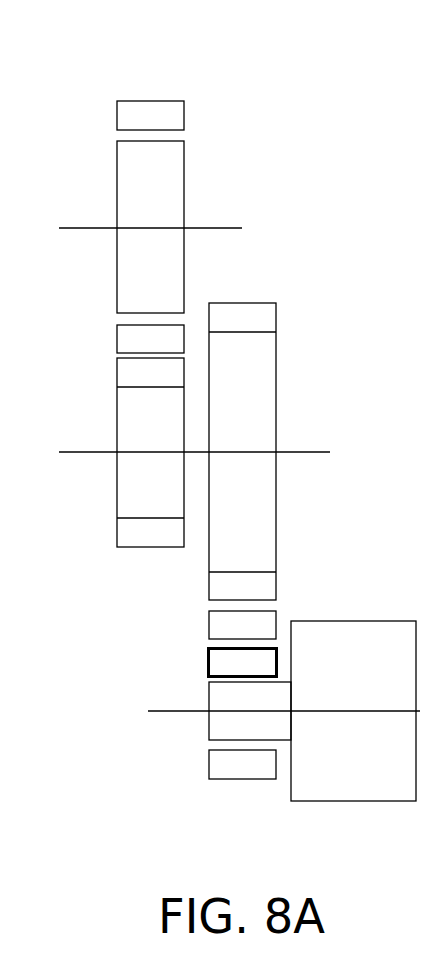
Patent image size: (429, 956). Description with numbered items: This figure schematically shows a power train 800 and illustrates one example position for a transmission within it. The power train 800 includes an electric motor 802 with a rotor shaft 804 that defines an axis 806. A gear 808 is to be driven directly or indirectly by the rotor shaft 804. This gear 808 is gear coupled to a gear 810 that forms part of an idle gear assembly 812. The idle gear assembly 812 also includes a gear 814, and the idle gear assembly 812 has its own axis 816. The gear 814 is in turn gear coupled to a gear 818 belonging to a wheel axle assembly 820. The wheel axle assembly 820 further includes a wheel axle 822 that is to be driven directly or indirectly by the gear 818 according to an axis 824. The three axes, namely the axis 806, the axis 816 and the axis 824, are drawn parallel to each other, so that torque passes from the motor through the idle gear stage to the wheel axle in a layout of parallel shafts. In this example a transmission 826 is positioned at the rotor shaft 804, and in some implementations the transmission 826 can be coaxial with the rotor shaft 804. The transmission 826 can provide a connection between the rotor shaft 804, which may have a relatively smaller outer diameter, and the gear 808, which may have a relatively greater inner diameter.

The power train 800 is at (233, 41).
The electric motor 802 is at (370, 676).
The rotor shaft 804 is at (267, 702).
The axis 806 is at (177, 710).
The gear 808 is at (260, 636).
The gear 810 is at (260, 329).
The idle gear assembly 812 is at (331, 414).
The gear 814 is at (168, 385).
The axis 816 is at (97, 451).
The gear 818 is at (168, 127).
The wheel axle assembly 820 is at (261, 201).
The wheel axle 822 is at (168, 196).
The axis 824 is at (105, 227).
The transmission 826 is at (260, 673).